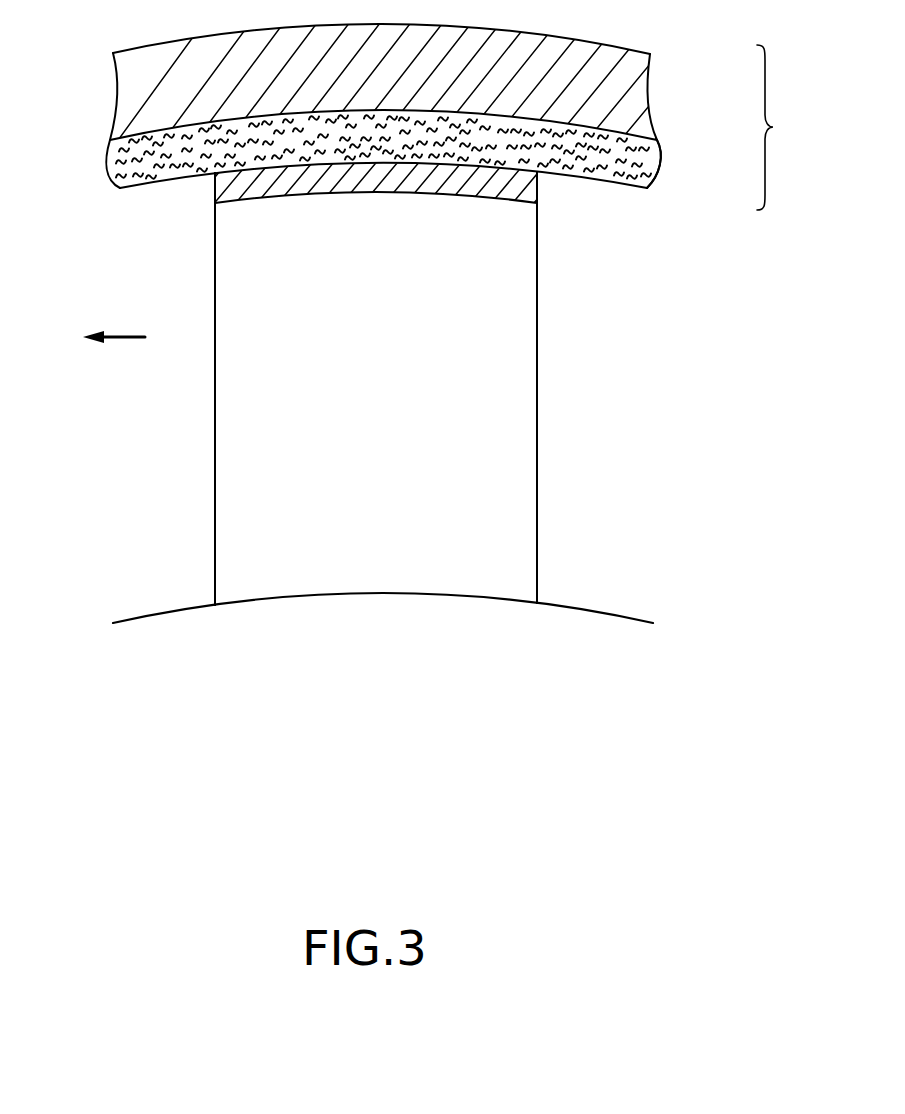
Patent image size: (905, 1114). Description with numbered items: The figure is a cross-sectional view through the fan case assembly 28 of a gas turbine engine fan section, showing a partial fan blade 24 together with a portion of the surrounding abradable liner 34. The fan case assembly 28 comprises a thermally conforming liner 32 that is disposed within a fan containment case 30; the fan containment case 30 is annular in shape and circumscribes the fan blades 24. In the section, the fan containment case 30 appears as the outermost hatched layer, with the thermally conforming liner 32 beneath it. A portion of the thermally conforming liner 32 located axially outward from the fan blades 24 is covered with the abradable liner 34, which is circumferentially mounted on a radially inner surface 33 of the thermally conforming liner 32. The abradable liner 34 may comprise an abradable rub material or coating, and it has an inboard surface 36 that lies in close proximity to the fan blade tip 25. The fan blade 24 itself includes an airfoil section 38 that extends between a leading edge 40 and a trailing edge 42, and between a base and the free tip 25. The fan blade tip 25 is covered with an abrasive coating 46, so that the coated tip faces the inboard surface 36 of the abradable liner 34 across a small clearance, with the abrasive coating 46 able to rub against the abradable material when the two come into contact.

The fan blade 24 is at (378, 389).
The fan blade tip 25 is at (391, 161).
The fan case assembly 28 is at (476, 664).
The fan containment case 30 is at (783, 127).
The thermally conforming liner 32 is at (130, 99).
The radially inner surface 33 is at (657, 167).
The abradable liner 34 is at (110, 172).
The inboard surface 36 is at (590, 177).
The airfoil section 38 is at (520, 347).
The leading edge 40 is at (215, 388).
The trailing edge 42 is at (537, 432).
The abrasive coating 46 is at (215, 190).